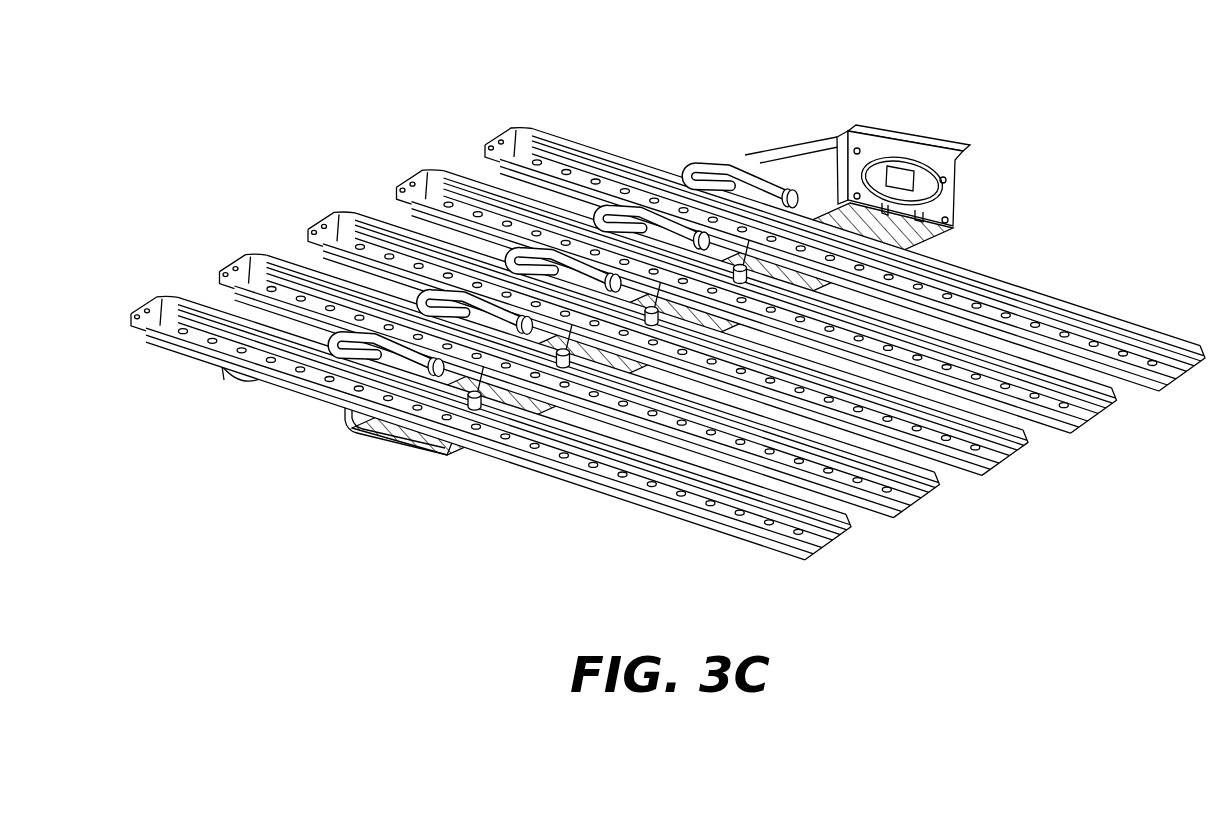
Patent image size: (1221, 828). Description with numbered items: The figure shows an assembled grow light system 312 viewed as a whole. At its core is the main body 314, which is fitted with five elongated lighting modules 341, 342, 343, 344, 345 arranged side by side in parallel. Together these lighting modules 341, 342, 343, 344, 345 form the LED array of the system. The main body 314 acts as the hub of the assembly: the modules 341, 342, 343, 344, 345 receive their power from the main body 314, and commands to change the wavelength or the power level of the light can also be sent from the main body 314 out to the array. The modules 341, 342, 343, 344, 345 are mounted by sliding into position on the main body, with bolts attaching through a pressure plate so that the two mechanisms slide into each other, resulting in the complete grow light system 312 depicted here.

The grow light system 312 is at (1050, 144).
The main body 314 is at (839, 139).
The lighting module 341 is at (557, 142).
The lighting module 342 is at (437, 183).
The lighting module 343 is at (348, 222).
The lighting module 344 is at (260, 262).
The lighting module 345 is at (172, 300).